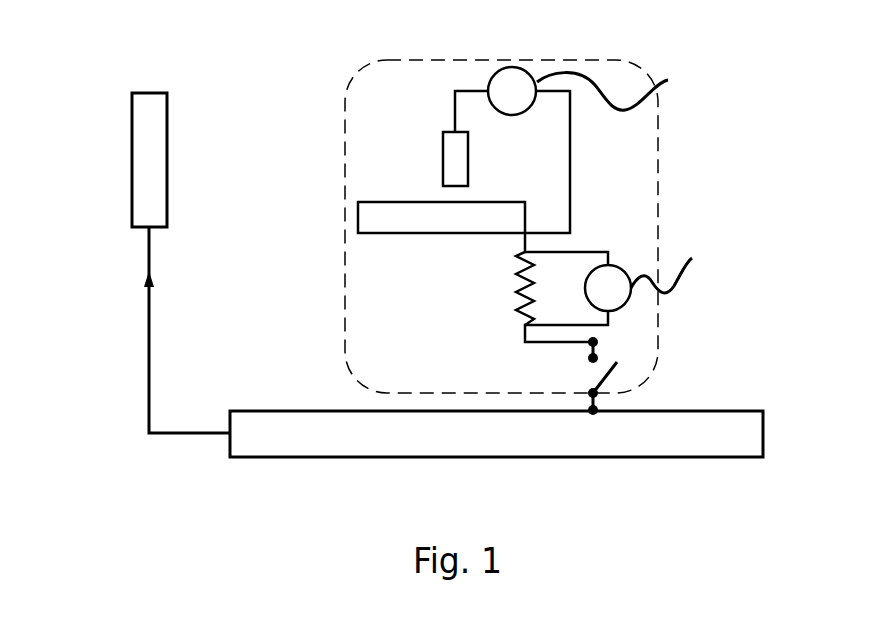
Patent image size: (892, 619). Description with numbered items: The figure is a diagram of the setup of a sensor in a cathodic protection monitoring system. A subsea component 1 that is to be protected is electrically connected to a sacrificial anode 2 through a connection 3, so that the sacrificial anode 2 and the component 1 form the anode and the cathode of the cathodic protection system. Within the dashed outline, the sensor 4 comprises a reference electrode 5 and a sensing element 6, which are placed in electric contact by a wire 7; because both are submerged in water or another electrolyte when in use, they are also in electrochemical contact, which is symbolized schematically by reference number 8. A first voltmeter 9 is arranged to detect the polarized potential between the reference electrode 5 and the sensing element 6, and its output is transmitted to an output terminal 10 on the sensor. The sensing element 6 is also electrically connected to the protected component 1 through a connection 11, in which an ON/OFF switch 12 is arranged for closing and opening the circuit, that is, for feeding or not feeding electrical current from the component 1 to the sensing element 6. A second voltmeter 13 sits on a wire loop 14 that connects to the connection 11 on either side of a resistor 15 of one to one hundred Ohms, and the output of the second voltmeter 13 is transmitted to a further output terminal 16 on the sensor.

The component 1 is at (712, 411).
The sacrificial anode 2 is at (167, 156).
The connection 3 is at (148, 356).
The sensor 4 is at (353, 60).
The reference electrode 5 is at (443, 160).
The sensing element 6 is at (435, 233).
The wire 7 is at (571, 157).
The electrochemical contact 8 is at (455, 195).
The first voltmeter 9 is at (513, 115).
The output terminal 10 is at (668, 80).
The connection 11 is at (548, 342).
The ON/OFF switch 12 is at (600, 378).
The second voltmeter 13 is at (620, 263).
The wire loop 14 is at (558, 325).
The resistor 15 is at (515, 300).
The output terminal 16 is at (679, 278).